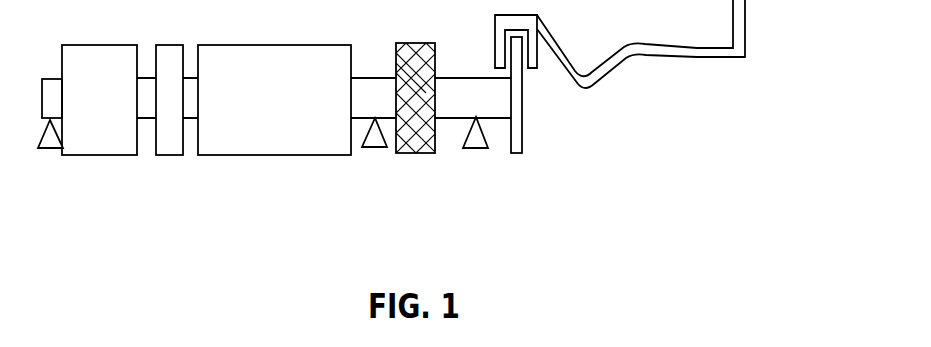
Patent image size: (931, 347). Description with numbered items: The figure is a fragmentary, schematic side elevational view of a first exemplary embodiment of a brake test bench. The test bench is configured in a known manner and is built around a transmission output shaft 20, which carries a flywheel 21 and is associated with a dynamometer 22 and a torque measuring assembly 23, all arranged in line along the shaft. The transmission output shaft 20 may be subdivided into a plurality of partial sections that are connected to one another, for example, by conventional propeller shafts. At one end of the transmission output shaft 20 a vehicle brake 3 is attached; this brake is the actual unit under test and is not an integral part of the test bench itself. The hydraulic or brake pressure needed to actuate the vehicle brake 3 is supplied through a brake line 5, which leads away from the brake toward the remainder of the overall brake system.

The transmission output shaft 20 is at (216, 183).
The flywheel 21 is at (113, 155).
The dynamometer 22 is at (283, 155).
The torque measuring assembly 23 is at (412, 153).
The vehicle brake 3 is at (532, 142).
The brake line 5 is at (745, 12).